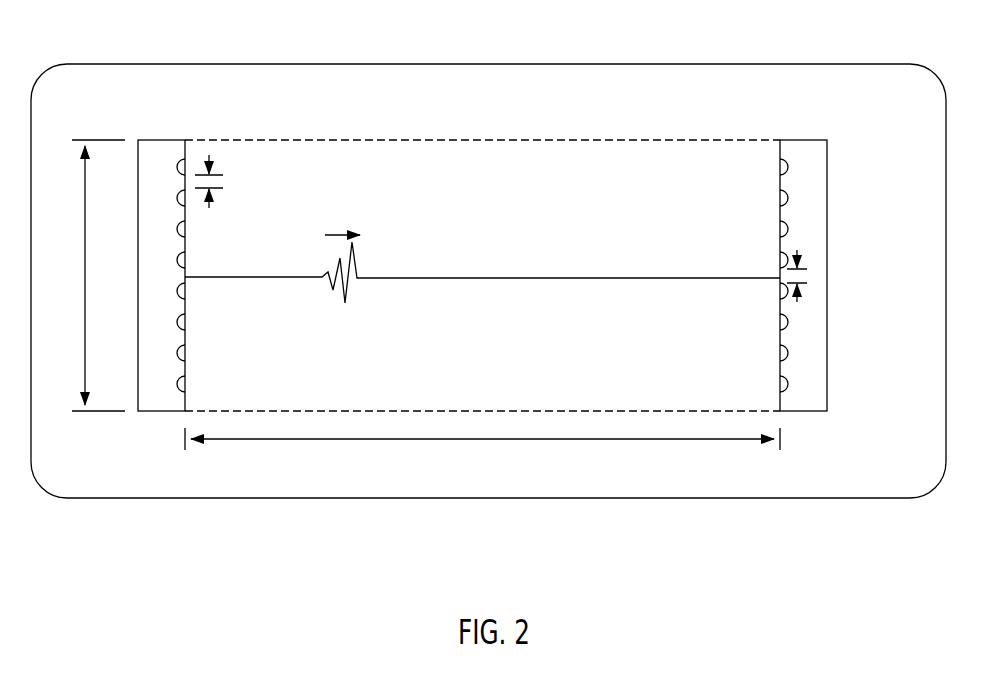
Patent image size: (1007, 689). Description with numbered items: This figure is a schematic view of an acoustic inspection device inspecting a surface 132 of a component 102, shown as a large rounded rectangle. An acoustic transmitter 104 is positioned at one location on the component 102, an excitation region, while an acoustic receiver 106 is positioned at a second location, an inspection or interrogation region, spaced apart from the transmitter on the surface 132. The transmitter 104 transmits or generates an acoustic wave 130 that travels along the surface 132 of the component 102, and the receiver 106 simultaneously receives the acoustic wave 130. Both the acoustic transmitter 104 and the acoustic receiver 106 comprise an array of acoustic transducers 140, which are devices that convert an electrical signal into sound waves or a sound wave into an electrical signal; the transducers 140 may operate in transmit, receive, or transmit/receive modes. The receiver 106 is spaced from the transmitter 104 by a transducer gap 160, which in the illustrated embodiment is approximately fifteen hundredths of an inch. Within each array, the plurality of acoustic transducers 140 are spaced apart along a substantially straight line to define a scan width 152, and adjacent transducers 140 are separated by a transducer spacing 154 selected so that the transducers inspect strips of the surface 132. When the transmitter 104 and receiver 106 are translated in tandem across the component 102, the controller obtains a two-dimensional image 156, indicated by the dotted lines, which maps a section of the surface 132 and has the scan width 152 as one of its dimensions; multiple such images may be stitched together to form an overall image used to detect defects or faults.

The component 102 is at (863, 64).
The acoustic transmitter 104 is at (163, 136).
The acoustic receiver 106 is at (806, 136).
The acoustic wave 130 is at (357, 260).
The surface 132 is at (434, 466).
The acoustic transducers 140 is at (178, 295).
The scan width 152 is at (85, 236).
The transducer spacing 154 is at (212, 200).
The two-dimensional image 156 is at (612, 140).
The transducer gap 160 is at (538, 440).